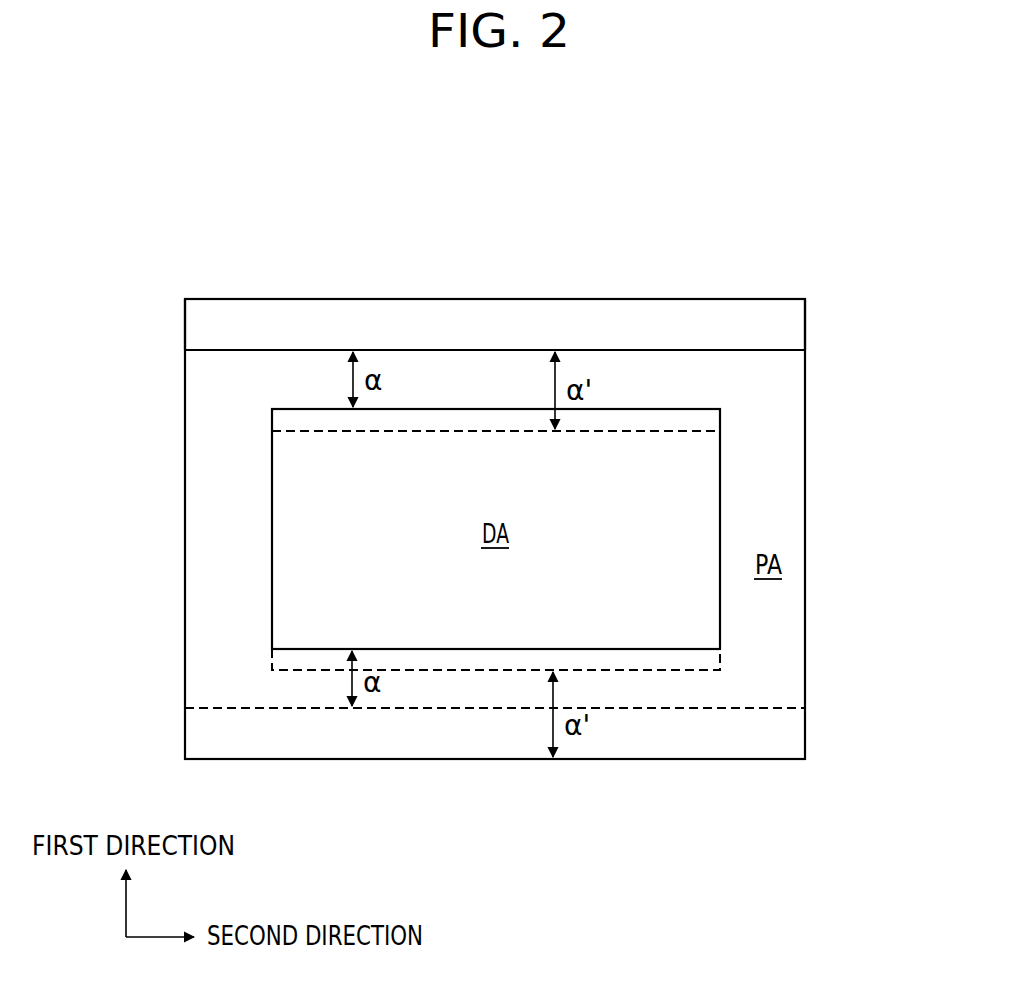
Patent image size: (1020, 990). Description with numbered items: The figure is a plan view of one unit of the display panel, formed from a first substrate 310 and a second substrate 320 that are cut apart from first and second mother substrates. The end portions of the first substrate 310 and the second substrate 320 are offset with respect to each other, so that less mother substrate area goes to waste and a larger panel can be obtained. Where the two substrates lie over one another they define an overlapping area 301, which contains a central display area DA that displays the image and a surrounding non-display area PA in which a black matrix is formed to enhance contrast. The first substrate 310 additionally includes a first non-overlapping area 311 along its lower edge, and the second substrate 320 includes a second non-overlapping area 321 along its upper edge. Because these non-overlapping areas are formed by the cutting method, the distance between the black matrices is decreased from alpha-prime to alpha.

The overlapping area 301 is at (683, 473).
The first substrate 310 is at (796, 417).
The first non-overlapping area 311 is at (652, 740).
The second substrate 320 is at (796, 322).
The second non-overlapping area 321 is at (641, 322).